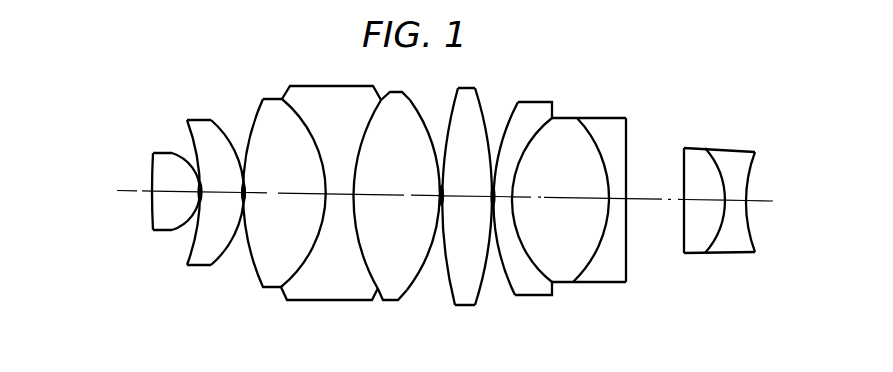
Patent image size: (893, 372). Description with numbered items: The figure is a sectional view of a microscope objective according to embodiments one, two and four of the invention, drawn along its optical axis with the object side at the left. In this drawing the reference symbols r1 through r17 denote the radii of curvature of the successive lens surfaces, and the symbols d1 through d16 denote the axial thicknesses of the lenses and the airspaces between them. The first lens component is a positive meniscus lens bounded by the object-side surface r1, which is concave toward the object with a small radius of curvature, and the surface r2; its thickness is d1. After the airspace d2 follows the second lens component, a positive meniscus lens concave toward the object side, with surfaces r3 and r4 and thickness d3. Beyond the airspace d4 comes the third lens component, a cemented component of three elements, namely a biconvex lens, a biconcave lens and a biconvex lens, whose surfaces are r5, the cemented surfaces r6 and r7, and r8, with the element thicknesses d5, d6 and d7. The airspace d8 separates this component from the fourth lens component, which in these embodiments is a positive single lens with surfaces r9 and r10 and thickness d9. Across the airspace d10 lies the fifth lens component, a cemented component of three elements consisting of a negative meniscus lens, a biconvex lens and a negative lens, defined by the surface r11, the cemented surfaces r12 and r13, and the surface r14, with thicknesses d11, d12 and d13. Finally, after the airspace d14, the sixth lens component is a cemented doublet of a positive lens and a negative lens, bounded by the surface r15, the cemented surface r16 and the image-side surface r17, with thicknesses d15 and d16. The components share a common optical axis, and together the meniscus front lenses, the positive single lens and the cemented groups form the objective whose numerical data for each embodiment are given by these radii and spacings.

The radius of curvature of first lens surface r1 is at (152, 203).
The radius of curvature of second lens surface r2 is at (178, 232).
The radius of curvature of third lens surface r3 is at (189, 262).
The radius of curvature of fourth lens surface r4 is at (217, 263).
The radius of curvature of fifth lens surface r5 is at (258, 285).
The radius of curvature of sixth lens surface r6 is at (293, 278).
The radius of curvature of seventh lens surface r7 is at (367, 288).
The radius of curvature of eighth lens surface r8 is at (412, 290).
The radius of curvature of ninth lens surface r9 is at (452, 293).
The radius of curvature of tenth lens surface r10 is at (482, 296).
The radius of curvature of eleventh lens surface r11 is at (508, 288).
The radius of curvature of twelfth lens surface r12 is at (535, 288).
The radius of curvature of thirteenth lens surface r13 is at (583, 272).
The radius of curvature of fourteenth lens surface r14 is at (628, 283).
The radius of curvature of fifteenth lens surface r15 is at (683, 236).
The radius of curvature of sixteenth lens surface r16 is at (715, 238).
The radius of curvature of seventeenth lens surface r17 is at (755, 237).
The thickness of first lens component d1 is at (173, 190).
The airspace between first and second lens components d2 is at (198, 182).
The thickness of second lens component d3 is at (221, 191).
The airspace between second and third lens components d4 is at (244, 180).
The thickness of biconvex front element of third lens component d5 is at (290, 191).
The thickness of biconcave element of third lens component d6 is at (341, 192).
The thickness of biconvex rear element of third lens component d7 is at (383, 193).
The airspace between third and fourth lens components d8 is at (440, 180).
The thickness of fourth lens component d9 is at (467, 194).
The airspace between fourth and fifth lens components d10 is at (495, 183).
The thickness of negative meniscus element of fifth lens component d11 is at (506, 193).
The thickness of biconvex element of fifth lens component d12 is at (557, 196).
The thickness of negative element of fifth lens component d13 is at (619, 196).
The airspace between fifth and sixth lens components d14 is at (650, 199).
The thickness of positive lens of sixth lens component d15 is at (698, 199).
The thickness of negative lens of sixth lens component d16 is at (737, 200).